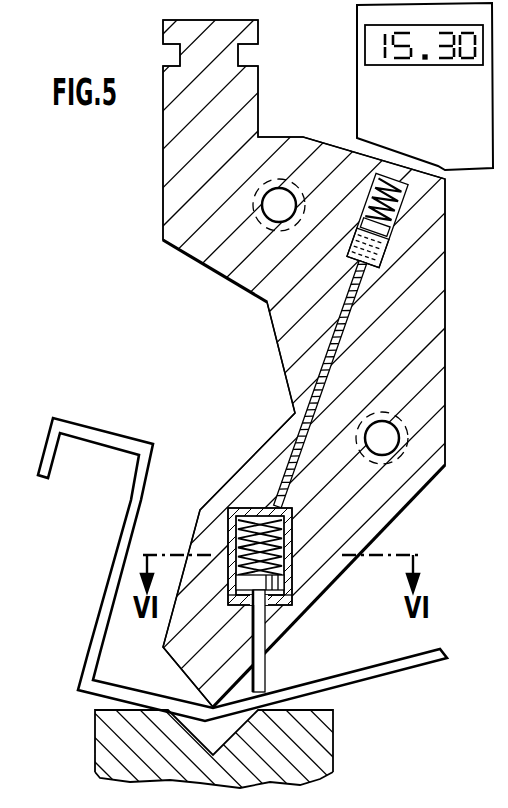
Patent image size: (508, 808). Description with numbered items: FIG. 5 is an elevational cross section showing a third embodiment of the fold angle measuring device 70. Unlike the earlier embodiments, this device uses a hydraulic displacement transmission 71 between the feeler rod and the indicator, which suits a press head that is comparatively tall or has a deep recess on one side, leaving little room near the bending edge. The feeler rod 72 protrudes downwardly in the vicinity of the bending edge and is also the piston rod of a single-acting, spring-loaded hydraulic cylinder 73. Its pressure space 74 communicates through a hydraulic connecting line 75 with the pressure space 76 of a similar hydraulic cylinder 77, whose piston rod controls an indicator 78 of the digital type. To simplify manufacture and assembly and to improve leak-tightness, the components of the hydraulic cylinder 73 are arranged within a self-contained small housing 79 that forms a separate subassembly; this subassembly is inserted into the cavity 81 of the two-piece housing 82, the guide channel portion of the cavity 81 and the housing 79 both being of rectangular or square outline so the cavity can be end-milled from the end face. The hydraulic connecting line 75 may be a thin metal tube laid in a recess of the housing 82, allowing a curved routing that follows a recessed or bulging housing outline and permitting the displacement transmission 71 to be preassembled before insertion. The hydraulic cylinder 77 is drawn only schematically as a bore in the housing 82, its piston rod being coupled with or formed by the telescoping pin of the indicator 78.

The fold angle measuring device 70 is at (128, 247).
The hydraulic displacement transmission 71 is at (345, 258).
The feeler rod 72 is at (266, 655).
The hydraulic cylinder 73 is at (294, 571).
The pressure space 74 is at (290, 525).
The hydraulic connecting line 75 is at (372, 250).
The pressure space 76 is at (370, 242).
The hydraulic cylinder 77 is at (413, 203).
The indicator 78 is at (357, 78).
The housing 79 is at (293, 598).
The housing cavity 81 is at (256, 636).
The housing 82 is at (188, 257).